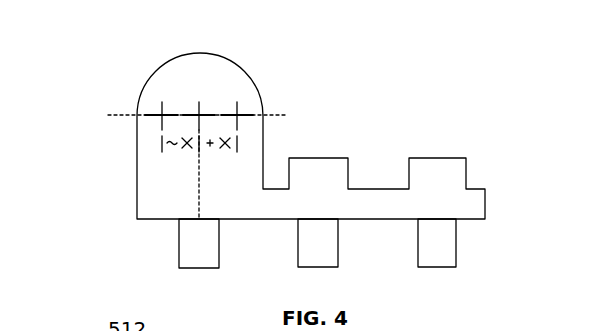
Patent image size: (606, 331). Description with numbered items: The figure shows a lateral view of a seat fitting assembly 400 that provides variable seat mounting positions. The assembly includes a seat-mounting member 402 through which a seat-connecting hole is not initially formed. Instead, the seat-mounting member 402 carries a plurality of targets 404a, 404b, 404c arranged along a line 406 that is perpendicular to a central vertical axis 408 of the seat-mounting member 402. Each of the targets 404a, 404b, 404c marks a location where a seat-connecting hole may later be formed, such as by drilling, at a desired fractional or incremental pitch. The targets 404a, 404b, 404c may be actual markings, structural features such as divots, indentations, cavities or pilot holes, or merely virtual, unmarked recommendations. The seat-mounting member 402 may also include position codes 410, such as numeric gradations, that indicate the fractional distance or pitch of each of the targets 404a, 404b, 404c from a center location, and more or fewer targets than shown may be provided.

The seat fitting assembly 400 is at (251, 134).
The seat-mounting member 402 is at (255, 83).
The target 404a is at (164, 101).
The target 404b is at (199, 101).
The target 404c is at (238, 103).
The line 406 is at (124, 117).
The central vertical axis 408 is at (199, 191).
The position codes 410 is at (178, 156).